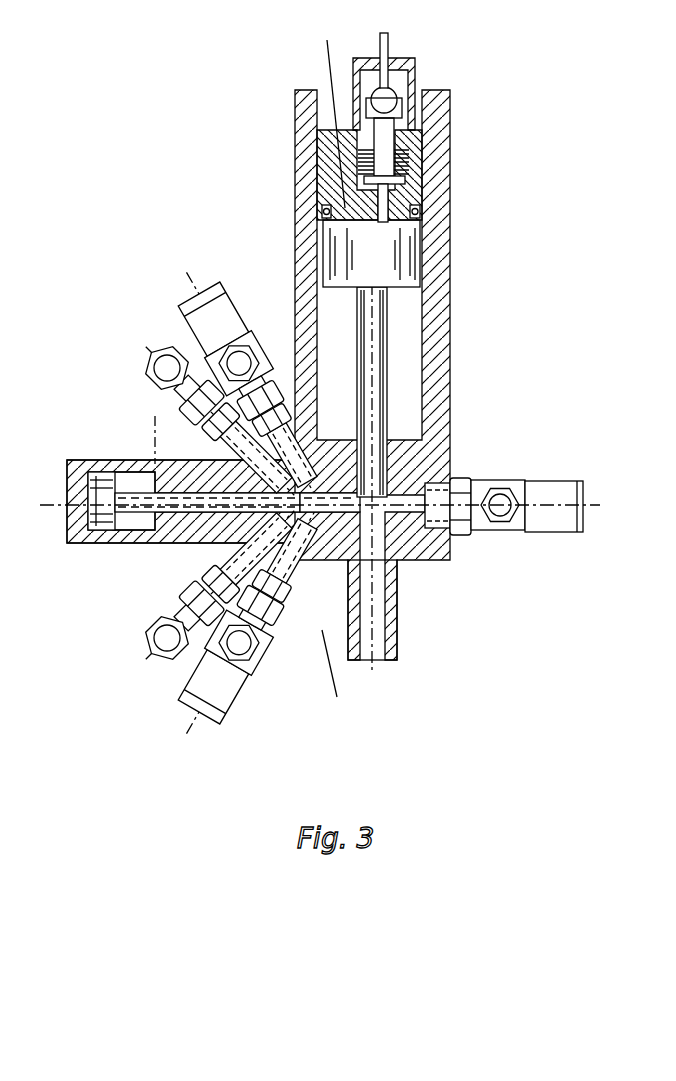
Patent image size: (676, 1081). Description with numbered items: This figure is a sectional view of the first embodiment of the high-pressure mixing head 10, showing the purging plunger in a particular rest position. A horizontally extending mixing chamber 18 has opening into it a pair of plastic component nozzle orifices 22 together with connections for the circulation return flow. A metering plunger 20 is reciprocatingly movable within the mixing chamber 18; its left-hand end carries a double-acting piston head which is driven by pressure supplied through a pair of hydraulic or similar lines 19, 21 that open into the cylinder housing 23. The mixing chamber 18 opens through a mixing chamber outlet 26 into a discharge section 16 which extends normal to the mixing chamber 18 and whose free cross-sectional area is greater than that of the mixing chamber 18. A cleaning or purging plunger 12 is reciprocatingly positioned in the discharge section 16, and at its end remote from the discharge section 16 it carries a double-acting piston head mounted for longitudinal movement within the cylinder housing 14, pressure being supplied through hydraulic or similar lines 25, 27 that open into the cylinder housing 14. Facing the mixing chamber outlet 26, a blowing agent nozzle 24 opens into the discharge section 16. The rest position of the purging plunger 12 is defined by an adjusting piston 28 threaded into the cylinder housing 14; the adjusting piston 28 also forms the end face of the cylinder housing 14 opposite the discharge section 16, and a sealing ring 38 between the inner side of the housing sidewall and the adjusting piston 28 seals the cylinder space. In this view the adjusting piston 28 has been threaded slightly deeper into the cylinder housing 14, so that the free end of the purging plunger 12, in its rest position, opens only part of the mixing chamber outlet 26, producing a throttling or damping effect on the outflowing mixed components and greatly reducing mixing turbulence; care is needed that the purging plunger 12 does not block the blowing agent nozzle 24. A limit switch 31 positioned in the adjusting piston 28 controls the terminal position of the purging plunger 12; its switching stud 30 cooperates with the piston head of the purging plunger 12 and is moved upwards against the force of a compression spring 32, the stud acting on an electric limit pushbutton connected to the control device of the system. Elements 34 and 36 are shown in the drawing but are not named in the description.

The mixing head 10 is at (506, 240).
The purging plunger 12 is at (385, 400).
The cylinder housing 14 is at (440, 290).
The discharge section 16 is at (388, 618).
The mixing chamber 18 is at (345, 512).
The hydraulic line 19 is at (92, 430).
The metering plunger 20 is at (135, 507).
The hydraulic line 21 is at (155, 431).
The plastic component nozzle orifices 22 is at (290, 482).
The cylinder housing 23 is at (140, 535).
The blowing agent nozzle 24 is at (430, 484).
The hydraulic line 25 is at (468, 441).
The mixing chamber outlet 26 is at (385, 515).
The hydraulic line 27 is at (327, 61).
The adjusting piston 28 is at (425, 192).
The switching stud 30 is at (418, 170).
The limit switch 31 is at (420, 79).
The compression spring 32 is at (408, 152).
The ball 34 is at (392, 102).
The pin 36 is at (389, 47).
The sealing ring 38 is at (418, 212).